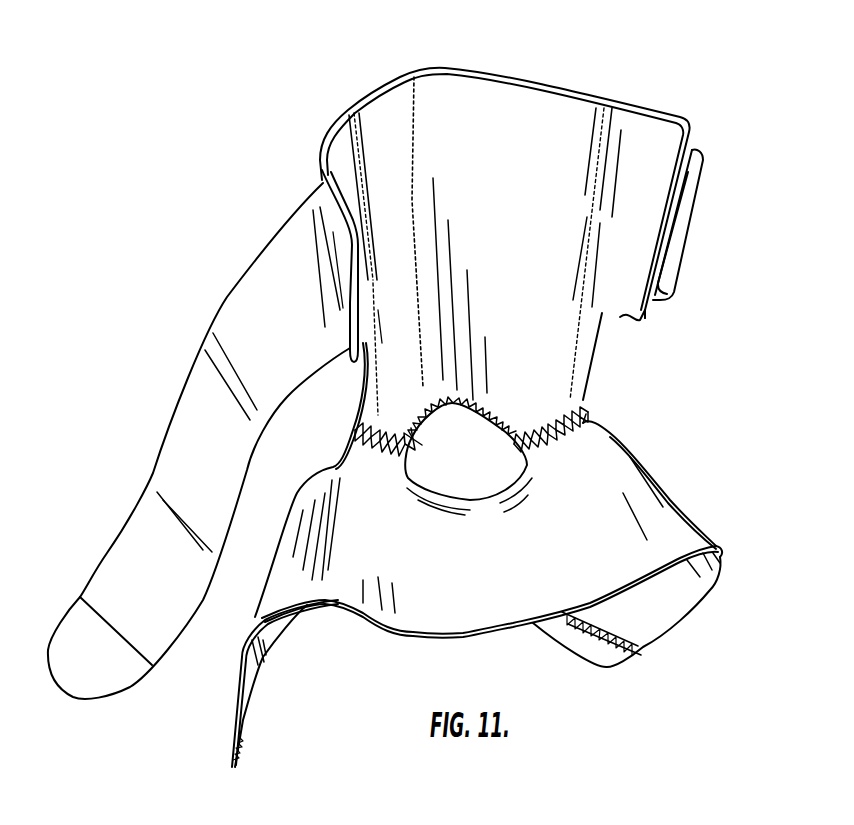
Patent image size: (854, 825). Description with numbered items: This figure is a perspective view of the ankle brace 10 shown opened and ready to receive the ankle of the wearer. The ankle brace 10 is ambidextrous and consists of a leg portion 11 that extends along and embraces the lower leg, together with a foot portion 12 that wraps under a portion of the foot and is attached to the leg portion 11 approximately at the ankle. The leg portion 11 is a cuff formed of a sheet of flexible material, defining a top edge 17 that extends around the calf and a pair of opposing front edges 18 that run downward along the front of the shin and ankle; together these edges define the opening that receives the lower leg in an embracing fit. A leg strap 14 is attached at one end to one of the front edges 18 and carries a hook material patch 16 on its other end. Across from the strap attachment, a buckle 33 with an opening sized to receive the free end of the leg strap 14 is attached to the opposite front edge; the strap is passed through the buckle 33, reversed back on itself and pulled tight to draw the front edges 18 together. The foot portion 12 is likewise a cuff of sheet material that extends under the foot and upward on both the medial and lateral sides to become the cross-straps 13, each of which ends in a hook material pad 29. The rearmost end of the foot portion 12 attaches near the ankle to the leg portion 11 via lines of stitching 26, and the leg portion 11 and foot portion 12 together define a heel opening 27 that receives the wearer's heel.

The ankle brace 10 is at (603, 67).
The leg portion 11 is at (477, 107).
The foot portion 12 is at (630, 487).
The cross-straps 13 is at (687, 605).
The leg strap 14 is at (232, 297).
The hook material patch 16 is at (83, 687).
The top edge 17 is at (373, 96).
The front edges 18 is at (350, 292).
The lines of stitching 26 is at (577, 400).
The heel opening 27 is at (493, 470).
The hook material pad 29 is at (607, 667).
The buckle 33 is at (688, 217).